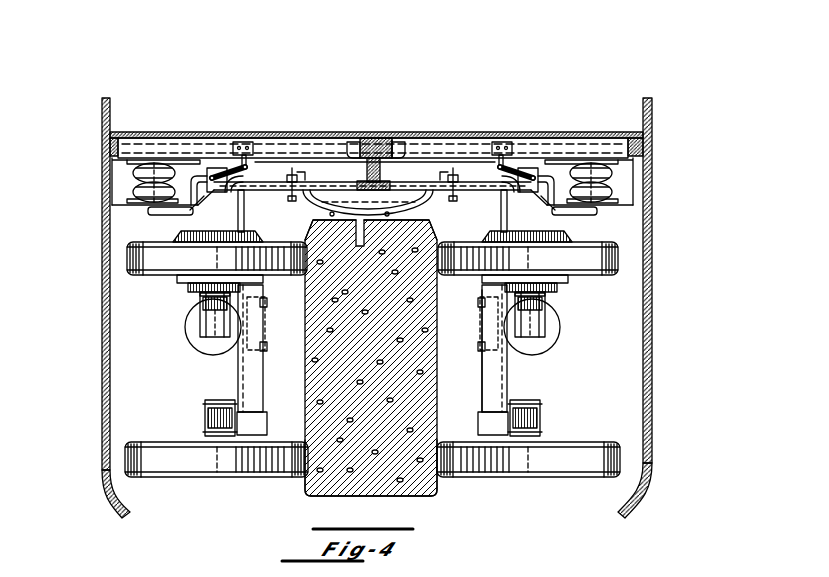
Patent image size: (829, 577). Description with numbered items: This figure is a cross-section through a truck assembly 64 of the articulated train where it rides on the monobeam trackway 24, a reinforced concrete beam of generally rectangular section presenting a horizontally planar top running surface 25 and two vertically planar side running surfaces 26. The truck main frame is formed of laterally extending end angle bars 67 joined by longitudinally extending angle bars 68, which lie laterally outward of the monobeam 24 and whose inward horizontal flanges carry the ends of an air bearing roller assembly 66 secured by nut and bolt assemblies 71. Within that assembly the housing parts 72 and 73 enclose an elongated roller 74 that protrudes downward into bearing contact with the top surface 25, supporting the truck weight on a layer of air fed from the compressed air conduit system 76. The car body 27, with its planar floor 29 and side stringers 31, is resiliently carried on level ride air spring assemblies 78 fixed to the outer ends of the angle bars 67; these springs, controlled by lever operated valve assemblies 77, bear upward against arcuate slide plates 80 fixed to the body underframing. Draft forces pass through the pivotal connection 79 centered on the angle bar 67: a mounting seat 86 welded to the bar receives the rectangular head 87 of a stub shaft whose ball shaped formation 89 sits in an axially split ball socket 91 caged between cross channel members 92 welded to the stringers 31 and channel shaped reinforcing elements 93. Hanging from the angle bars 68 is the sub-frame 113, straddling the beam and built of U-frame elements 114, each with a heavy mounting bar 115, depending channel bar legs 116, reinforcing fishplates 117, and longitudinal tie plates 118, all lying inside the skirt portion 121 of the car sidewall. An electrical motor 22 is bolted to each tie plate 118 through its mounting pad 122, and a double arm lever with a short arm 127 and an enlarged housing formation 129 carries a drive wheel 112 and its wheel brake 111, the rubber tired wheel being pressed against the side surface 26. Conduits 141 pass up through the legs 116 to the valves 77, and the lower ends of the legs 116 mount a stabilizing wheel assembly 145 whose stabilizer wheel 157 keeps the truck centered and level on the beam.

The electrical motor 22 is at (190, 330).
The monobeam trackway 24 is at (377, 358).
The top running surface 25 is at (414, 212).
The side running surface 26 is at (306, 477).
The car body 27 is at (102, 306).
The planar floor 29 is at (583, 132).
The side stringer 31 is at (110, 146).
The truck assembly 64 is at (100, 201).
The air bearing roller assembly 66 is at (287, 162).
The end angle bar 67 is at (125, 178).
The longitudinal angle bar 68 is at (255, 150).
The nut and bolt assembly 71 is at (291, 206).
The roller housing part 72 is at (445, 155).
The roller housing part 73 is at (367, 232).
The elongated roller 74 is at (362, 218).
The compressed air conduit system 76 is at (241, 233).
The valve assembly 77 is at (208, 178).
The level ride air spring assembly 78 is at (146, 199).
The pivotal connection 79 is at (386, 131).
The arcuate slide plate 80 is at (150, 160).
The mounting seat 86 is at (384, 182).
The rectangular head 87 is at (364, 182).
The ball shaped formation 89 is at (394, 139).
The ball socket 91 is at (370, 138).
The cross channel member 92 is at (480, 146).
The channel shaped reinforcing element 93 is at (371, 137).
The wheel brake 111 is at (180, 275).
The drive wheel 112 is at (143, 274).
The sub-frame 113 is at (236, 345).
The U-frame element 114 is at (510, 378).
The mounting bar 115 is at (501, 212).
The channel bar leg 116 is at (262, 372).
The reinforcing fishplate 117 is at (242, 212).
The tie plate 118 is at (261, 334).
The skirt portion 121 is at (102, 393).
The mounting pad 122 is at (263, 320).
The short arm 127 is at (505, 295).
The housing formation 129 is at (540, 318).
The conduit 141 is at (242, 374).
The stabilizing wheel assembly 145 is at (204, 412).
The stabilizer wheel 157 is at (210, 458).